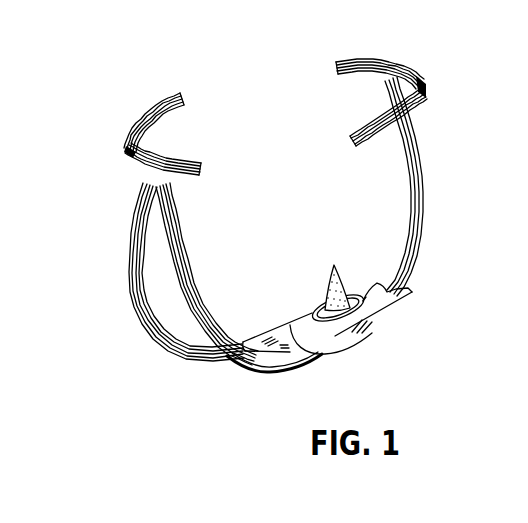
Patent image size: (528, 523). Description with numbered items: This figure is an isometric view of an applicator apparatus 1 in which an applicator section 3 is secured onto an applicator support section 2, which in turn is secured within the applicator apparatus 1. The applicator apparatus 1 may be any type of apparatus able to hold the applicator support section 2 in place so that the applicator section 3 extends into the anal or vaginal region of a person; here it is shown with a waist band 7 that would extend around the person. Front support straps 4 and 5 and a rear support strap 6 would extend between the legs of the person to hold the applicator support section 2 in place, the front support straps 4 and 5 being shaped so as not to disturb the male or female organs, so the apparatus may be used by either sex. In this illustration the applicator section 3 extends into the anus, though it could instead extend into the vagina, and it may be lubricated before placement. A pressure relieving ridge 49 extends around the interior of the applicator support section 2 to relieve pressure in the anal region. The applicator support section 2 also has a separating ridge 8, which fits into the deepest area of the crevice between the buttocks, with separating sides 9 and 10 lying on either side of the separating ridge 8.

The applicator apparatus 1 is at (468, 264).
The applicator support section 2 is at (367, 336).
The applicator section 3 is at (333, 268).
The front support strap 4 is at (130, 258).
The front support strap 5 is at (186, 272).
The rear support strap 6 is at (425, 210).
The waist band 7 is at (180, 155).
The separating ridge 8 is at (297, 319).
The separating side 9 is at (337, 340).
The separating side 10 is at (354, 291).
The pressure relieving ridge 49 is at (365, 305).